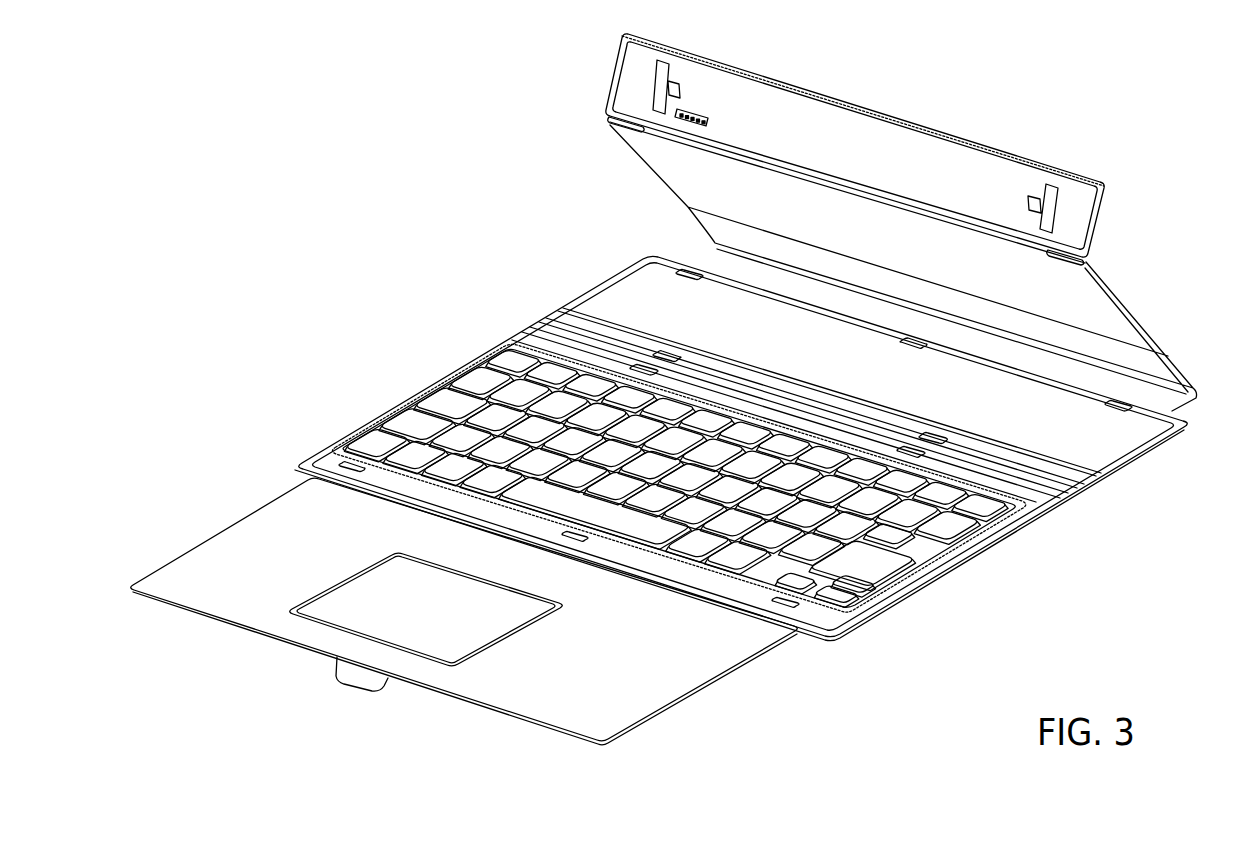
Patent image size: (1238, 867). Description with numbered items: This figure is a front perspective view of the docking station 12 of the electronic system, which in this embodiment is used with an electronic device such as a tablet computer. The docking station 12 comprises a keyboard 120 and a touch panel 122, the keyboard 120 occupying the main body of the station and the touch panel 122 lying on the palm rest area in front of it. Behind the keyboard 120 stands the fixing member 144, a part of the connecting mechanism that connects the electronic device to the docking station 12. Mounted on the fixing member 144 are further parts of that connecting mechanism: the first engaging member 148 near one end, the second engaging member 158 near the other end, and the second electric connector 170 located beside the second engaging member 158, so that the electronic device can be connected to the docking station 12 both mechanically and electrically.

The docking station 12 is at (601, 283).
The keyboard 120 is at (478, 376).
The touch panel 122 is at (473, 622).
The fixing member 144 is at (875, 155).
The first engaging member 148 is at (1042, 198).
The second engaging member 158 is at (653, 80).
The second electric connector 170 is at (706, 113).